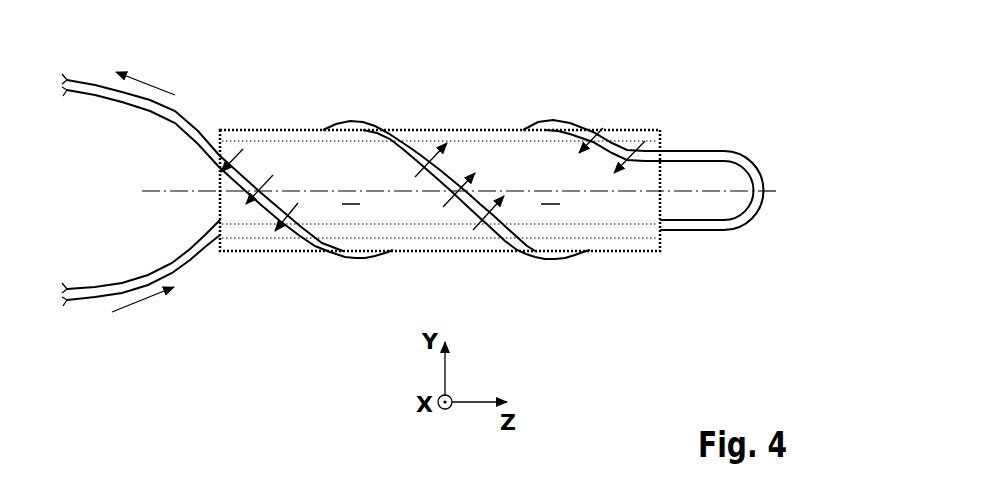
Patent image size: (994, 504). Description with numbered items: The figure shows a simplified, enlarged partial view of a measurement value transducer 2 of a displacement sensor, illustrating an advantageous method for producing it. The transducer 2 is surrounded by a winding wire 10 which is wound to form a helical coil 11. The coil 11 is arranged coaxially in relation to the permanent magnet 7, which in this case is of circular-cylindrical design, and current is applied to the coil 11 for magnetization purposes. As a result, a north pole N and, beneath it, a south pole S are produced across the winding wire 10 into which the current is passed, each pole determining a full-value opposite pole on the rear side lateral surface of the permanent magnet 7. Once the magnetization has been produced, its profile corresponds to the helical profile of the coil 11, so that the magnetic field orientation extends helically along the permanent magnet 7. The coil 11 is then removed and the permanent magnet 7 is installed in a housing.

The measurement value transducer 2 is at (634, 90).
The permanent magnet 7 is at (441, 230).
The winding wire 10 is at (362, 122).
The helical coil 11 is at (117, 288).